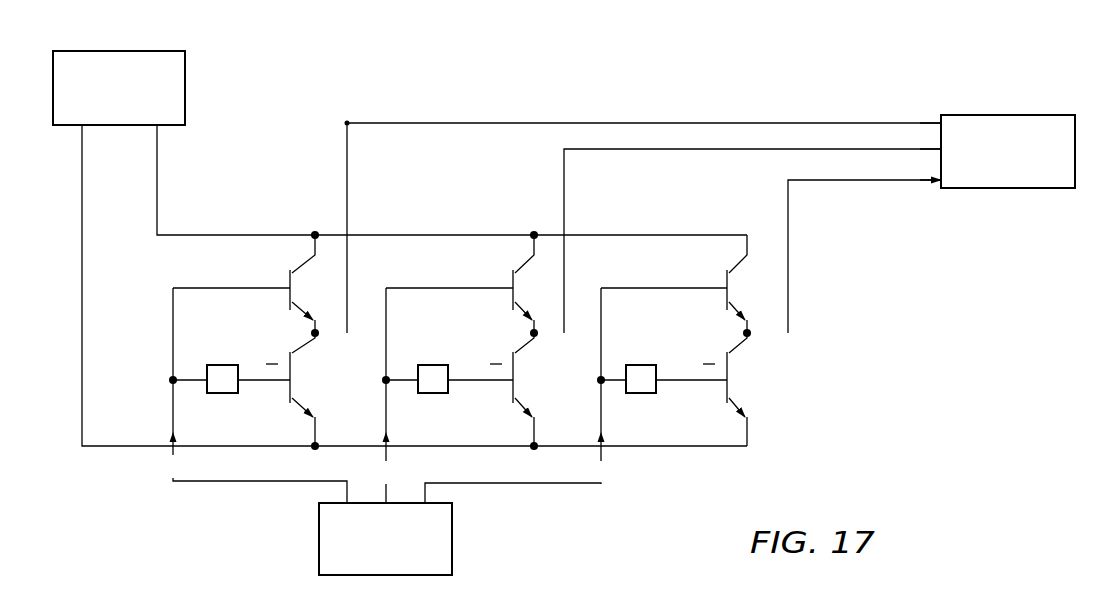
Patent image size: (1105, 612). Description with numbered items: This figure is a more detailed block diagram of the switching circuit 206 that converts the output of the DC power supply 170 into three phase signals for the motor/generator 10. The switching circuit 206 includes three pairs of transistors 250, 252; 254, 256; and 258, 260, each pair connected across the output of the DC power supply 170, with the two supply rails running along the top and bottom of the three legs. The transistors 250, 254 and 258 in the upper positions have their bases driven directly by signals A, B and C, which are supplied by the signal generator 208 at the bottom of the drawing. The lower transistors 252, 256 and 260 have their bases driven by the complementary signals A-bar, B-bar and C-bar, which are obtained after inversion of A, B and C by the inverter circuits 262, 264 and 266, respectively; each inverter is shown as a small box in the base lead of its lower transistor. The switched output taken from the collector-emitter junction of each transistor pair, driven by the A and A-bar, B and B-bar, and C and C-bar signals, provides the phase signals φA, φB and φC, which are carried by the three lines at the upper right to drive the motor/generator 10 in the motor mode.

The motor/generator 10 is at (1055, 115).
The DC power supply 170 is at (160, 51).
The switching circuit 206 is at (322, 160).
The signal generator 208 is at (433, 576).
The transistor 250 is at (302, 266).
The transistor 252 is at (303, 346).
The transistor 254 is at (524, 266).
The transistor 256 is at (525, 346).
The transistor 258 is at (737, 266).
The transistor 260 is at (738, 346).
The inverter circuit 262 is at (219, 364).
The inverter circuit 264 is at (431, 364).
The inverter circuit 266 is at (644, 364).